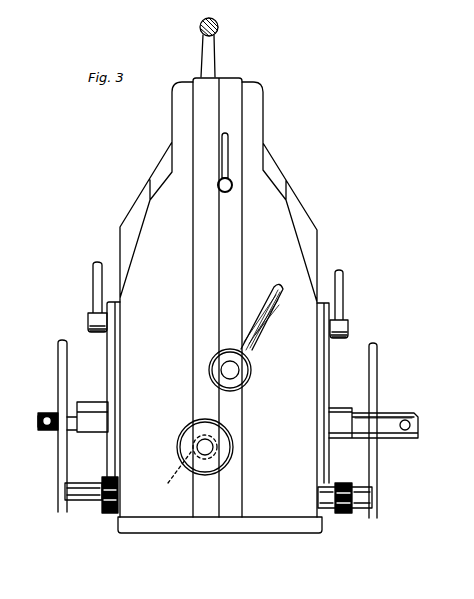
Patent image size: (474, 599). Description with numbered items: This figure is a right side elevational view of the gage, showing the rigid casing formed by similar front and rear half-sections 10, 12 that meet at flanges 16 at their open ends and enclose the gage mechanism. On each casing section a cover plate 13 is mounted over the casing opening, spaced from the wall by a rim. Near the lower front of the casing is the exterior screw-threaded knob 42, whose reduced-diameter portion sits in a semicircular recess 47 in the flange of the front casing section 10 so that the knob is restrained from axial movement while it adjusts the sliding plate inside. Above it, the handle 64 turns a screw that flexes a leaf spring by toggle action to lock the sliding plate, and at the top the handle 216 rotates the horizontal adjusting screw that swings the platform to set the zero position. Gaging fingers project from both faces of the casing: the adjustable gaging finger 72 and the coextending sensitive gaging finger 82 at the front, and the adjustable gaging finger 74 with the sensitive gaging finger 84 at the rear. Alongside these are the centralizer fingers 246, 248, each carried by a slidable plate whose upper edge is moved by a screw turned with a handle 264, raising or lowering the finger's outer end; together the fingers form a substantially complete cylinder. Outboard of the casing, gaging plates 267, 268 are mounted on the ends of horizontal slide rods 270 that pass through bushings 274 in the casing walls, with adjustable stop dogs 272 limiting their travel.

The front casing half-section 10 is at (140, 207).
The rear casing half-section 12 is at (300, 213).
The cover plate 13 is at (108, 367).
The meeting flange 16 is at (225, 77).
The screw-threaded knob 42 is at (193, 428).
The semicircular recess 47 is at (177, 476).
The handle 64 is at (282, 290).
The adjustable gaging finger 72 is at (40, 433).
The adjustable gaging finger 74 is at (415, 440).
The sensitive gaging finger 82 is at (48, 432).
The sensitive gaging finger 84 is at (393, 430).
The handle 216 is at (228, 148).
The centralizer finger 246 is at (53, 413).
The centralizer finger 248 is at (389, 412).
The handle 264 is at (343, 292).
The gaging plate 267 is at (60, 372).
The gaging plate 268 is at (378, 383).
The slide rod 270 is at (76, 510).
The adjustable stop dog 272 is at (112, 515).
The bushing 274 is at (323, 522).